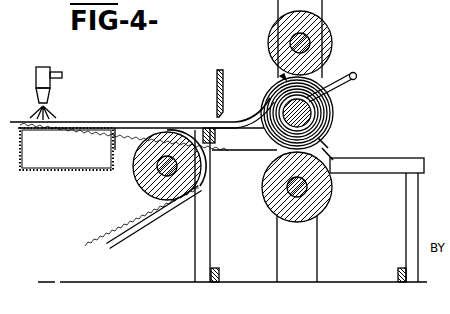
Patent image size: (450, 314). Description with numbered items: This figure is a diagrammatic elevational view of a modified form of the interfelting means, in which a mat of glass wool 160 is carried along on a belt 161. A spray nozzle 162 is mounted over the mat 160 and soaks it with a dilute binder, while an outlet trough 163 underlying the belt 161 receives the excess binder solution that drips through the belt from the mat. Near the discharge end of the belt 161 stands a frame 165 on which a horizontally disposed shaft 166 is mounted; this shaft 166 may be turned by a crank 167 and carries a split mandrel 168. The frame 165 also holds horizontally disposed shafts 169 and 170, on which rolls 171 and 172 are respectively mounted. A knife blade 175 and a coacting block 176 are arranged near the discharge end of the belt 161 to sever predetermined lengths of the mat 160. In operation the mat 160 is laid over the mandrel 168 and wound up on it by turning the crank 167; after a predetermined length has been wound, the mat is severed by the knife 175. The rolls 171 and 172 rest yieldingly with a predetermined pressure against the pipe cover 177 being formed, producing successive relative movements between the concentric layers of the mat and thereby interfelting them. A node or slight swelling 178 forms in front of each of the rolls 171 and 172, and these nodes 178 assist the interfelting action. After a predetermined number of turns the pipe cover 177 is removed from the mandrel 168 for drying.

The mat of glass wool 160 is at (68, 122).
The belt 161 is at (125, 135).
The spray nozzle 162 is at (46, 67).
The outlet trough 163 is at (40, 168).
The frame 165 is at (317, 254).
The shaft 166 is at (334, 125).
The crank 167 is at (357, 82).
The split mandrel 168 is at (333, 105).
The shaft 169 is at (333, 190).
The shaft 170 is at (330, 36).
The roll 171 is at (326, 200).
The roll 172 is at (331, 52).
The knife blade 175 is at (217, 91).
The coacting block 176 is at (216, 138).
The pipe cover 177 is at (330, 142).
The node 178 is at (282, 76).